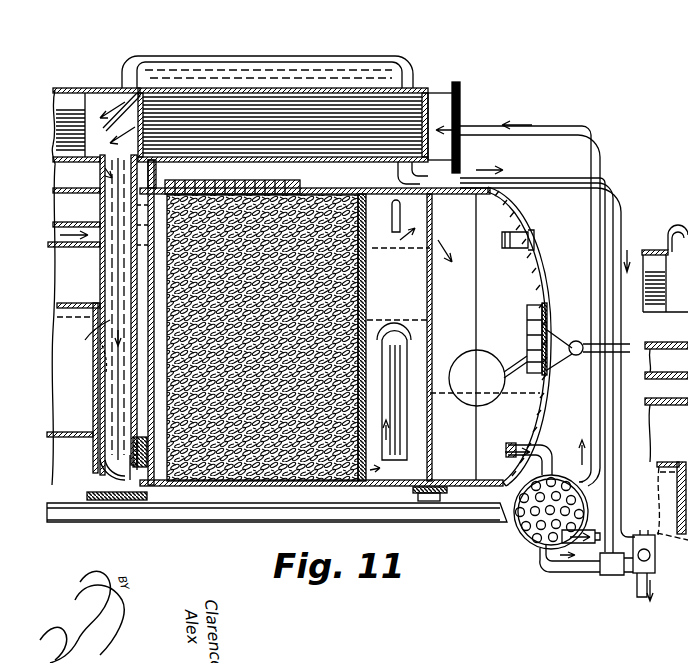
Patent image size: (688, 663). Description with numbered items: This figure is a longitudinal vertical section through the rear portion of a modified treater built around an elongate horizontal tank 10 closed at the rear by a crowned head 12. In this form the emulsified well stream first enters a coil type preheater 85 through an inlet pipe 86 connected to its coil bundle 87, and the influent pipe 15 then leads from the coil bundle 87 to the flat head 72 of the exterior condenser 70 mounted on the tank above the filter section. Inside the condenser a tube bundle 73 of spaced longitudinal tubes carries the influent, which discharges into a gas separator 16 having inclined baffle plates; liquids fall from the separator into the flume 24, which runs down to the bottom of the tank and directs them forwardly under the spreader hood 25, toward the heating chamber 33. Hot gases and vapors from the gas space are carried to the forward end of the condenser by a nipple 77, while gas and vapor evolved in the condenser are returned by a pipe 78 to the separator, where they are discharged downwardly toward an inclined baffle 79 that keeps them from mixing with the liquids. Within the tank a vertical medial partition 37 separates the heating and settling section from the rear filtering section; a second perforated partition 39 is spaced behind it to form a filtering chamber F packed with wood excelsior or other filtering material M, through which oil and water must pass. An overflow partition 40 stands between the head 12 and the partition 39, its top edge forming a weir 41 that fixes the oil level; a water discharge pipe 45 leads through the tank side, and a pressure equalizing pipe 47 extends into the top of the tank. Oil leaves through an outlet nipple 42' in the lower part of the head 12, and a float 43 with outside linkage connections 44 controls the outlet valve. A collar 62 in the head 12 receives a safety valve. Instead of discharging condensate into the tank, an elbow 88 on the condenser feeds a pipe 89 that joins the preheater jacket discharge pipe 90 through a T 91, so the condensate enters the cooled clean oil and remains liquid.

The tank 10 is at (180, 485).
The head 12 is at (542, 290).
The inlet pipe 15 is at (543, 125).
The gas separator 16 is at (57, 95).
The flume 24 is at (105, 332).
The spreader hood 25 is at (58, 440).
The heating chamber 33 is at (78, 315).
The medial partition 37 is at (135, 215).
The perforated partition 39 is at (368, 280).
The overflow partition 40 is at (431, 280).
The weir 41 is at (438, 240).
The oil outlet nipple 42' is at (550, 413).
The float 43 is at (478, 355).
The linkage connections 44 is at (620, 417).
The water discharge pipe 45 is at (405, 435).
The pressure equalizing pipe 47 is at (400, 212).
The collar 62 is at (534, 243).
The condenser 70 is at (260, 170).
The flat head 72 is at (462, 110).
The tube bundle 73 is at (325, 112).
The nipple 77 is at (160, 172).
The pipe 78 is at (264, 59).
The inclined baffle 79 is at (125, 108).
The coil type preheater 85 is at (530, 545).
The inlet pipe 86 is at (592, 572).
The coil bundle 87 is at (522, 515).
The elbow 88 is at (420, 186).
The pipe 89 is at (465, 177).
The discharge pipe 90 is at (550, 565).
The T 91 is at (642, 580).
The filtering chamber F is at (207, 483).
The filtering material M is at (250, 483).